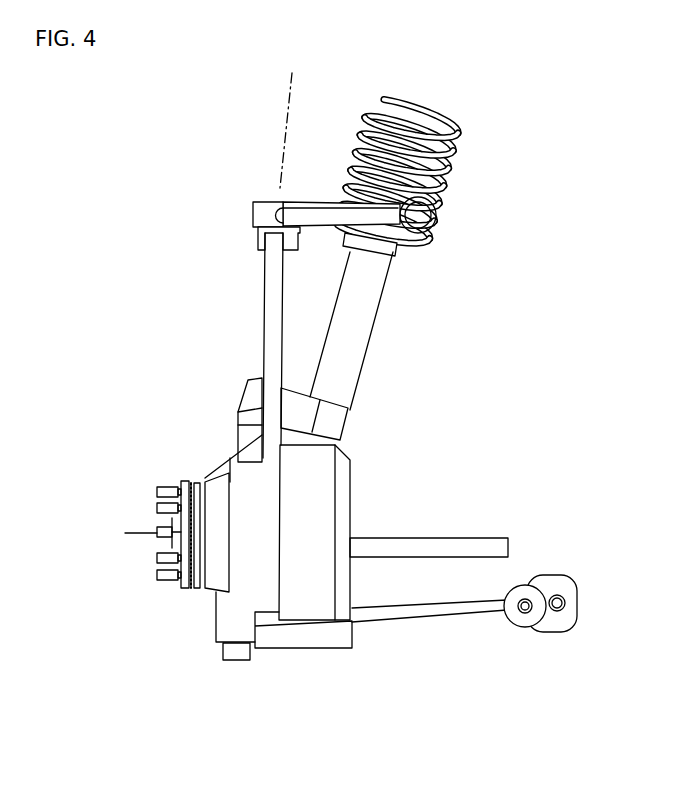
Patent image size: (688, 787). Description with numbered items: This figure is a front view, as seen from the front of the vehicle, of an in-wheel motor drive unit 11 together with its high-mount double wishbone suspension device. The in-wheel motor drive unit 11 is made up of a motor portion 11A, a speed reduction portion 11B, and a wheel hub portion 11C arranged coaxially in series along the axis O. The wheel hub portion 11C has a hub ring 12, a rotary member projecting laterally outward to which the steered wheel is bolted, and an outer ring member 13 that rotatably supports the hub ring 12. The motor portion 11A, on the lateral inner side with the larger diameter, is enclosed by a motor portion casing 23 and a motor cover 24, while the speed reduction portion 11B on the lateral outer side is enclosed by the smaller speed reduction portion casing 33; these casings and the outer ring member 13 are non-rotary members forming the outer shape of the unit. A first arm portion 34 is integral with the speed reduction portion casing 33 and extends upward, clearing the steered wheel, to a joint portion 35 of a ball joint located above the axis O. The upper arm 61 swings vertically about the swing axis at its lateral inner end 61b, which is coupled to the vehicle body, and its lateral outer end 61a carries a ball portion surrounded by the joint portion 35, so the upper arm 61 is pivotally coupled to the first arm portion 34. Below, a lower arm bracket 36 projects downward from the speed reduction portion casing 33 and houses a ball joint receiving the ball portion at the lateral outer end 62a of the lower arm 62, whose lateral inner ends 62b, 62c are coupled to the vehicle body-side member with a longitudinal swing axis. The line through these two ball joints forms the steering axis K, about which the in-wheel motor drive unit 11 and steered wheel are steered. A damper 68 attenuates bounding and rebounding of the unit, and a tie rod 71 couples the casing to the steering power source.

The steering axis K is at (289, 121).
The axis O is at (129, 535).
The in-wheel motor drive unit 11 is at (289, 508).
The motor portion 11A is at (343, 448).
The speed reduction portion 11B is at (237, 462).
The wheel hub portion 11C is at (182, 523).
The hub ring 12 is at (184, 590).
The outer ring member 13 is at (197, 590).
The motor portion casing 23 is at (312, 458).
The motor cover 24 is at (350, 492).
The speed reduction portion casing 33 is at (230, 472).
The first arm portion 34 is at (277, 310).
The joint portion 35 is at (257, 229).
The lower arm bracket 36 is at (222, 632).
The upper arm 61 is at (328, 200).
The lateral outer end 61a is at (253, 215).
The lateral inner end 61b is at (437, 216).
The lower arm 62 is at (421, 625).
The lateral outer end 62a is at (248, 647).
The lateral inner end 62b is at (519, 610).
The lateral inner end 62c is at (567, 599).
The damper 68 is at (373, 287).
The tie rod 71 is at (423, 542).